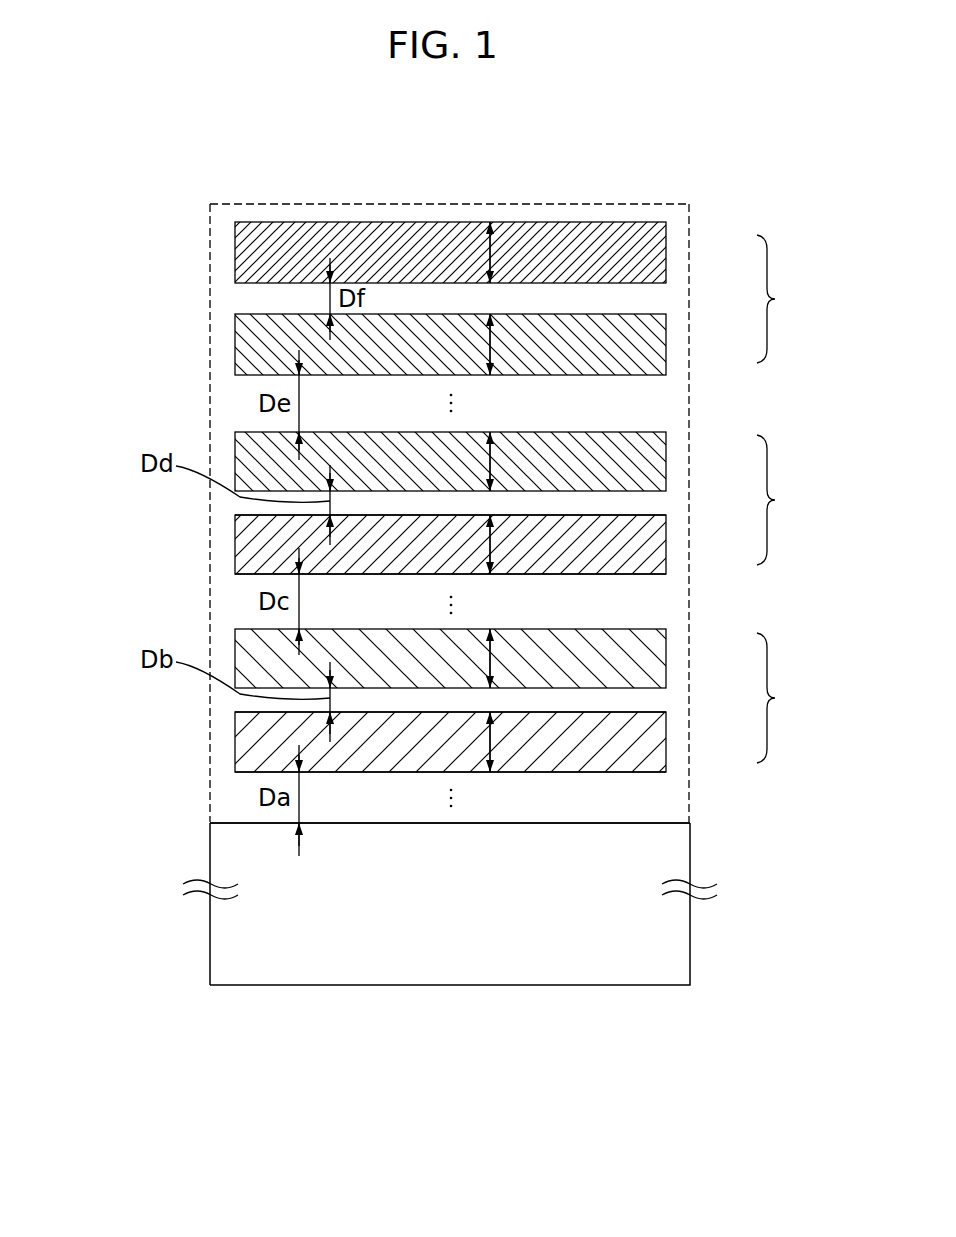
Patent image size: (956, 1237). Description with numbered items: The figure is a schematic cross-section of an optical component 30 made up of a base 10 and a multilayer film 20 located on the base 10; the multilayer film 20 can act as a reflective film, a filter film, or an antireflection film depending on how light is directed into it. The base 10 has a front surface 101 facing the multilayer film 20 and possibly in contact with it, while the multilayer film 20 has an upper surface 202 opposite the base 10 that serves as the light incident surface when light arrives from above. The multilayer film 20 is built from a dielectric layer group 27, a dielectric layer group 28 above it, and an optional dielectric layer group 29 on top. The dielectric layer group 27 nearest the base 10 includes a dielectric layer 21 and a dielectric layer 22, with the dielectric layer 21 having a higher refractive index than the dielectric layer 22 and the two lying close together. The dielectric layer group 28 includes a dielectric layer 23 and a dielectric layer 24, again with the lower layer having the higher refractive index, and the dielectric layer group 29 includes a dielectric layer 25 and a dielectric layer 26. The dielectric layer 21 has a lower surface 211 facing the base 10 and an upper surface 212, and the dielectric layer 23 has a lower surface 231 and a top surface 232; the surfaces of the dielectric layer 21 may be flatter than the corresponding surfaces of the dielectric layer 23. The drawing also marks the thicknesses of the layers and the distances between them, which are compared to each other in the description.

The base 10 is at (386, 937).
The multilayer film 20 is at (398, 483).
The dielectric layer 21 is at (442, 726).
The dielectric layer 22 is at (666, 658).
The dielectric layer 23 is at (442, 528).
The dielectric layer 24 is at (666, 457).
The dielectric layer 25 is at (666, 343).
The dielectric layer 26 is at (666, 252).
The dielectric layer group 27 is at (787, 698).
The dielectric layer group 28 is at (787, 500).
The dielectric layer group 29 is at (787, 299).
The optical component 30 is at (170, 150).
The front surface 101 is at (206, 825).
The upper surface 202 is at (206, 207).
The lower surface 211 is at (231, 771).
The upper surface 212 is at (231, 711).
The lower surface 231 is at (231, 573).
The top surface 232 is at (231, 514).